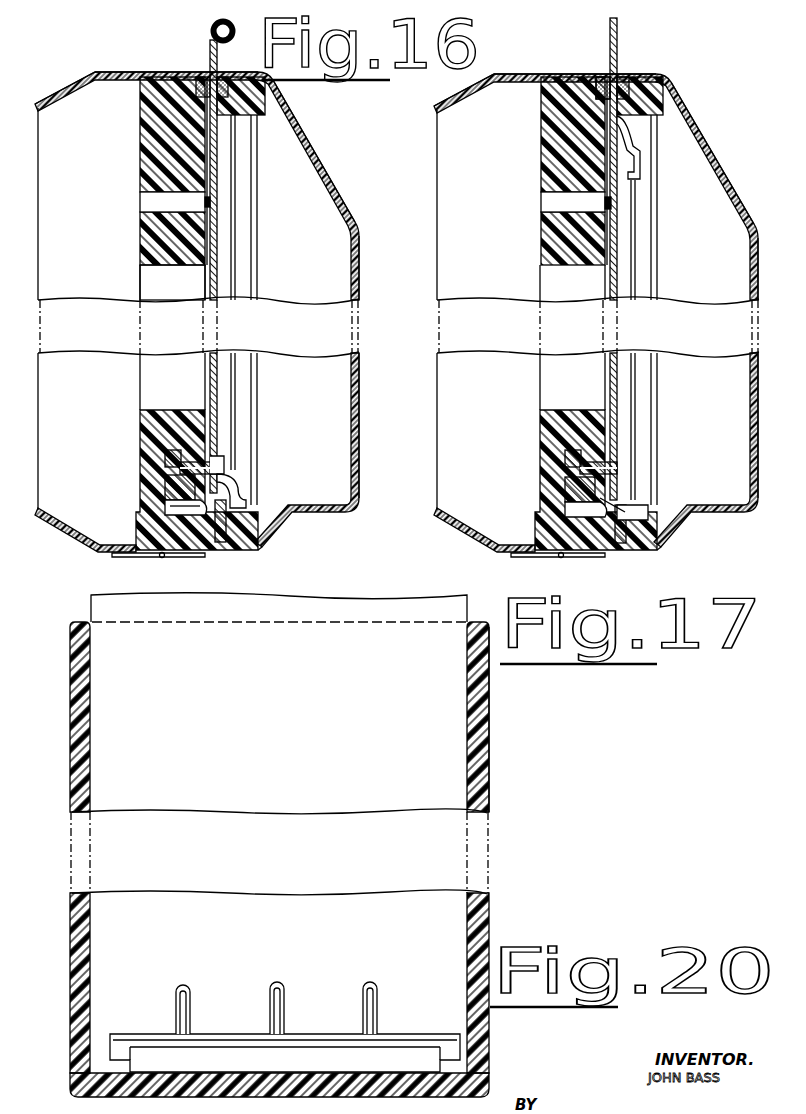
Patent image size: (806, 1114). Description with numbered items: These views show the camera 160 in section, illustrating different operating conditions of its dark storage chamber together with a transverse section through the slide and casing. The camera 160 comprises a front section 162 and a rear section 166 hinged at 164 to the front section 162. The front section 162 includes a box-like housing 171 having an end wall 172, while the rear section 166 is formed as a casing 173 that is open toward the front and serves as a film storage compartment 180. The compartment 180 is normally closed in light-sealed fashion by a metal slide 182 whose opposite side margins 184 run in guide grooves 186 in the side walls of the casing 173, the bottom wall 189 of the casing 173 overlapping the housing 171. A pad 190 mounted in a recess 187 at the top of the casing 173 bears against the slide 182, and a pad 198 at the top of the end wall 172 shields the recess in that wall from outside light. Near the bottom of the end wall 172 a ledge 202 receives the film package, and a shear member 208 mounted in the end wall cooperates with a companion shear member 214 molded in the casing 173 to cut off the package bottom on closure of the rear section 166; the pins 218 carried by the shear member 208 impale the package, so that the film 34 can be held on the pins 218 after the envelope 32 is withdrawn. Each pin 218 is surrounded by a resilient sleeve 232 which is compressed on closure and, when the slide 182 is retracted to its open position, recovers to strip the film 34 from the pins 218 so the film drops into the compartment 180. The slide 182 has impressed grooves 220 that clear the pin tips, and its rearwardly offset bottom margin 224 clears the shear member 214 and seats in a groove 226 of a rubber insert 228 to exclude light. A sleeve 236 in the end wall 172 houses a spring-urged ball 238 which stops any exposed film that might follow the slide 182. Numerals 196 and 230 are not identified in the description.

In FIG. 16, the camera 160 is at (166, 72).
In FIG. 17, the camera 160 is at (666, 76).
In FIG. 16, the front section 162 is at (82, 74).
In FIG. 17, the front section 162 is at (518, 72).
In FIG. 16, the housing 171 is at (52, 97).
In FIG. 17, the housing 171 is at (448, 102).
In FIG. 16, the rear section 166 is at (317, 152).
In FIG. 17, the rear section 166 is at (692, 124).
In FIG. 16, the casing 173 is at (345, 205).
In FIG. 17, the casing 173 is at (744, 204).
In FIG. 20, the casing 173 is at (485, 782).
In FIG. 16, the film storage compartment 180 is at (332, 283).
In FIG. 17, the film storage compartment 180 is at (732, 418).
In FIG. 16, the recess 187 is at (232, 91).
In FIG. 17, the recess 187 is at (636, 90).
In FIG. 16, the end wall 172 is at (146, 144).
In FIG. 17, the end wall 172 is at (548, 160).
In FIG. 16, the sleeve 236 is at (150, 205).
In FIG. 17, the sleeve 236 is at (557, 207).
In FIG. 16, the spring-urged ball 238 is at (211, 205).
In FIG. 17, the spring-urged ball 238 is at (612, 207).
In FIG. 16, the pad 198 is at (205, 78).
In FIG. 17, the pad 198 is at (603, 78).
In FIG. 17, the sealing ring 196 is at (594, 97).
In FIG. 16, the pad 190 is at (226, 82).
In FIG. 17, the pad 190 is at (628, 80).
In FIG. 16, the slide 182 is at (211, 34).
In FIG. 17, the slide 182 is at (618, 54).
In FIG. 20, the slide 182 is at (445, 742).
In FIG. 16, the film 34 is at (208, 290).
In FIG. 17, the film 34 is at (608, 296).
In FIG. 16, the cavity 230 is at (147, 288).
In FIG. 16, the ledge 202 is at (165, 522).
In FIG. 17, the ledge 202 is at (565, 526).
In FIG. 16, the pins 218 is at (165, 458).
In FIG. 17, the pins 218 is at (566, 455).
In FIG. 16, the shear member 208 is at (166, 482).
In FIG. 17, the shear member 208 is at (567, 490).
In FIG. 16, the envelope 32 is at (168, 508).
In FIG. 17, the envelope 32 is at (568, 510).
In FIG. 16, the sleeve 232 is at (224, 460).
In FIG. 17, the sleeve 232 is at (566, 483).
In FIG. 16, the bottom margin 224 is at (244, 498).
In FIG. 17, the bottom margin 224 is at (641, 170).
In FIG. 16, the shear member 214 is at (226, 548).
In FIG. 17, the shear member 214 is at (632, 512).
In FIG. 20, the shear member 214 is at (241, 1045).
In FIG. 17, the groove 226 is at (638, 508).
In FIG. 16, the insert 228 is at (262, 535).
In FIG. 17, the insert 228 is at (626, 548).
In FIG. 16, the hinge 164 is at (163, 558).
In FIG. 17, the hinge 164 is at (563, 558).
In FIG. 20, the guide grooves 186 is at (88, 722).
In FIG. 20, the side margins 184 is at (88, 945).
In FIG. 20, the bottom wall 189 is at (312, 1095).
In FIG. 20, the grooves 220 is at (194, 990).